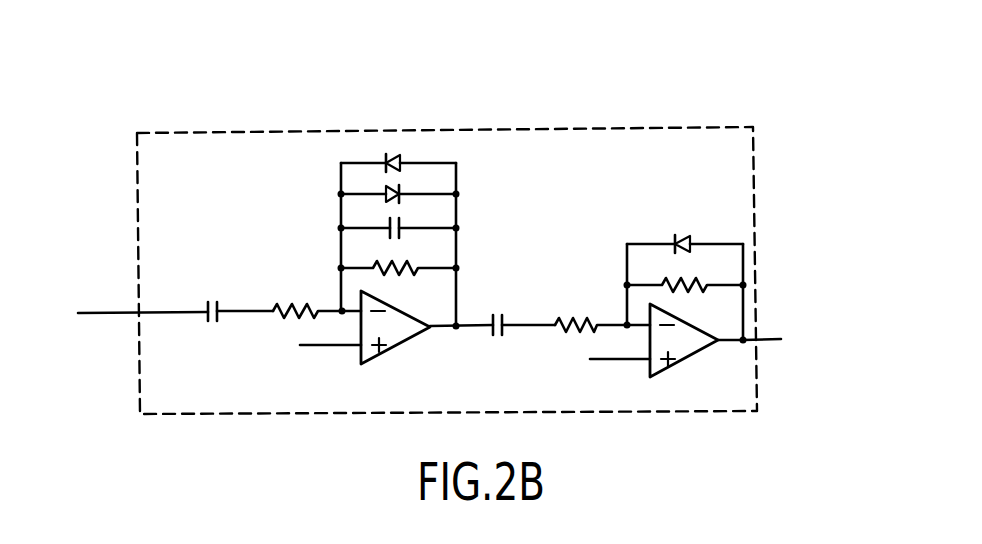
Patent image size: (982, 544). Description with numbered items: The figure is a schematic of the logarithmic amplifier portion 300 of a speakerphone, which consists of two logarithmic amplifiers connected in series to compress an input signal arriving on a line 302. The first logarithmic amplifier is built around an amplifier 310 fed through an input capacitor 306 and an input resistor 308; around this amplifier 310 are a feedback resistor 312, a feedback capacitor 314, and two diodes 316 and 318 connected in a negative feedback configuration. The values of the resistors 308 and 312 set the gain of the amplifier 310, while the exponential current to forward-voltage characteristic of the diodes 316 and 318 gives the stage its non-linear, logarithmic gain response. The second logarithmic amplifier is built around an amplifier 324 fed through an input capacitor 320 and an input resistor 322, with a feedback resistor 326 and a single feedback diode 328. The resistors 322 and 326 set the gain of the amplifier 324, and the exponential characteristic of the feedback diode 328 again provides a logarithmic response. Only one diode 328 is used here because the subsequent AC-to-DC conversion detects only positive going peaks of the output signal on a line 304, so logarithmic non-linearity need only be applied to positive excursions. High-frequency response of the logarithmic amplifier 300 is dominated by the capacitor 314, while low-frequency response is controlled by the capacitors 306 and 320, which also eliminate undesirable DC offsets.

The logarithmic amplifier portion 300 is at (478, 98).
The line 302 is at (105, 313).
The line 304 is at (770, 335).
The input capacitor 306 is at (205, 306).
The input resistor 308 is at (273, 301).
The amplifier 310 is at (378, 355).
The feedback resistor 312 is at (407, 263).
The feedback capacitor 314 is at (400, 226).
The diode 316 is at (400, 192).
The diode 318 is at (402, 158).
The input capacitor 320 is at (505, 319).
The input resistor 322 is at (572, 315).
The amplifier 324 is at (670, 368).
The feedback resistor 326 is at (695, 278).
The feedback diode 328 is at (690, 233).